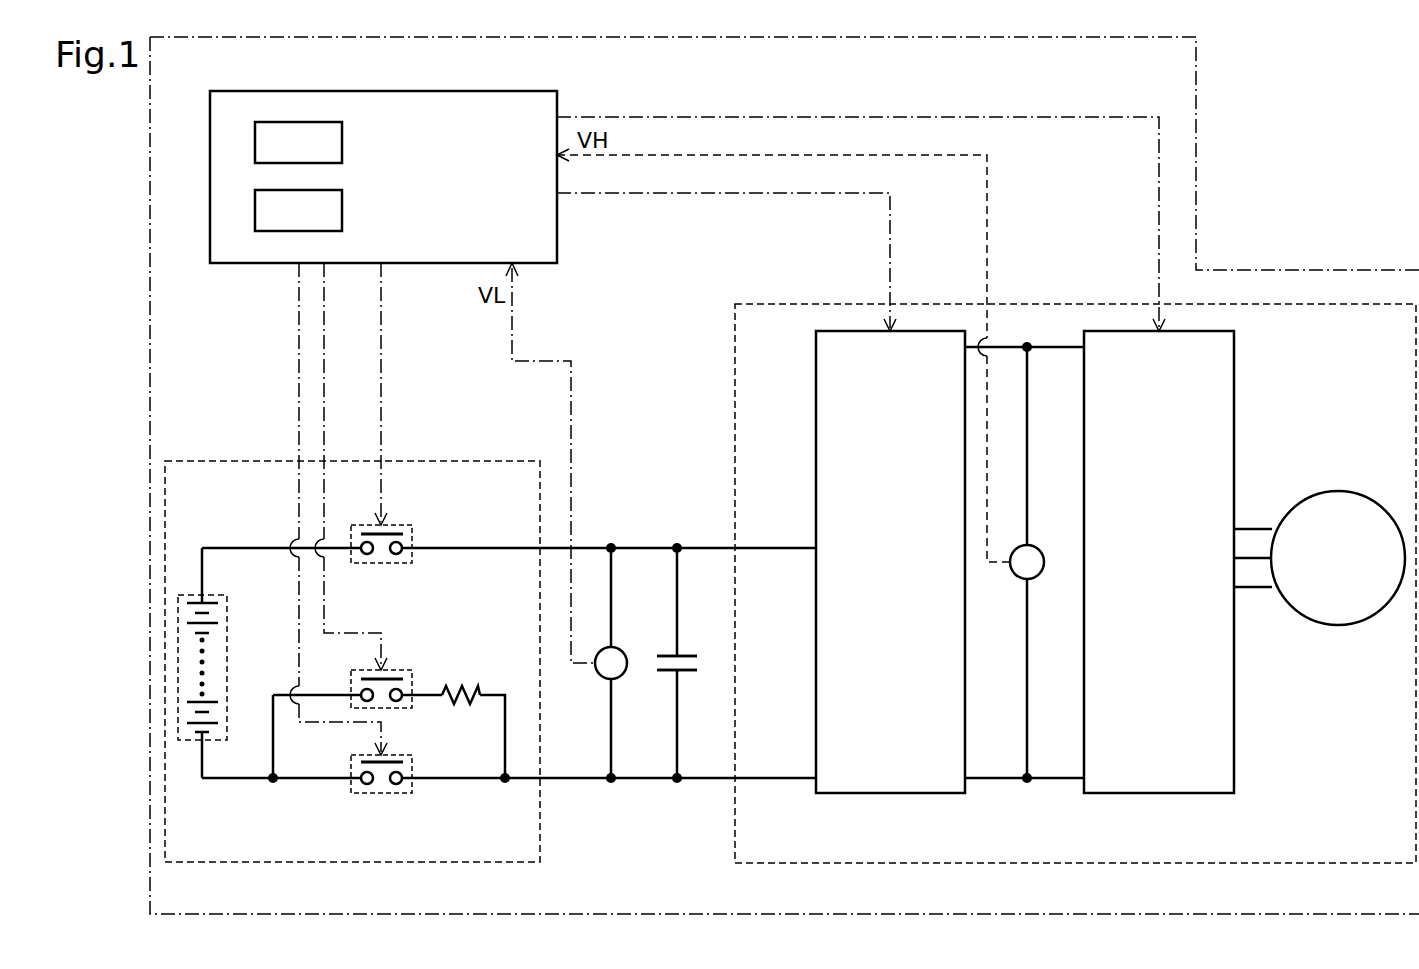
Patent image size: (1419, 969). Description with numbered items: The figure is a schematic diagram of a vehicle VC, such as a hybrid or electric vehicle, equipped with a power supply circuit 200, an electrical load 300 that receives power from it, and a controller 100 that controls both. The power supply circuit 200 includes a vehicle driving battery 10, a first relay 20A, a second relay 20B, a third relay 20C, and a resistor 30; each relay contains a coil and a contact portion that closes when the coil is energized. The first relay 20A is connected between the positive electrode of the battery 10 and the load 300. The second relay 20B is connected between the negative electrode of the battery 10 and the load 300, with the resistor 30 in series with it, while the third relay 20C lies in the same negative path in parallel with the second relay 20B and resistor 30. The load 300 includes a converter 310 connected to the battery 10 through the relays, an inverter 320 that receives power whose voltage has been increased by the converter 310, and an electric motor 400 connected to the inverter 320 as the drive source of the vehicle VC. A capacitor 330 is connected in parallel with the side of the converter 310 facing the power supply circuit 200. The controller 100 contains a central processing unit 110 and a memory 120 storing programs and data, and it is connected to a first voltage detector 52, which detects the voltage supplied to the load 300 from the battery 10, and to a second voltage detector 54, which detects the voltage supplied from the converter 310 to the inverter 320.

The vehicle driving battery 10 is at (228, 623).
The first relay 20A is at (397, 522).
The second relay 20B is at (400, 668).
The third relay 20C is at (395, 793).
The resistor 30 is at (467, 723).
The first voltage detector 52 is at (605, 680).
The second voltage detector 54 is at (1040, 552).
The controller 100 is at (297, 91).
The central processing unit 110 is at (342, 142).
The memory 120 is at (342, 211).
The power supply circuit 200 is at (373, 862).
The electrical load 300 is at (997, 863).
The converter 310 is at (816, 428).
The inverter 320 is at (1234, 383).
The capacitor 330 is at (700, 633).
The electric motor 400 is at (1338, 491).
The vehicle VC is at (1197, 103).